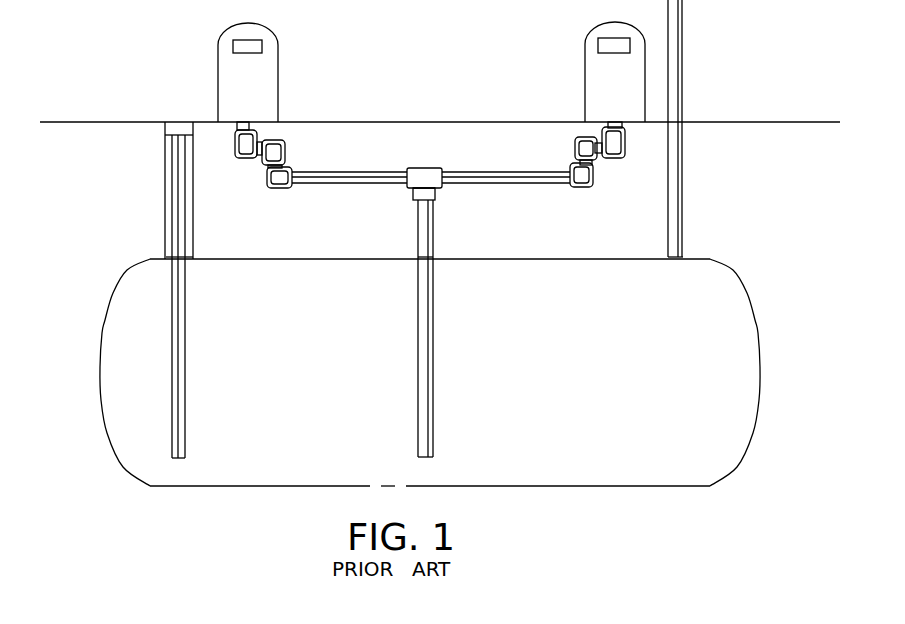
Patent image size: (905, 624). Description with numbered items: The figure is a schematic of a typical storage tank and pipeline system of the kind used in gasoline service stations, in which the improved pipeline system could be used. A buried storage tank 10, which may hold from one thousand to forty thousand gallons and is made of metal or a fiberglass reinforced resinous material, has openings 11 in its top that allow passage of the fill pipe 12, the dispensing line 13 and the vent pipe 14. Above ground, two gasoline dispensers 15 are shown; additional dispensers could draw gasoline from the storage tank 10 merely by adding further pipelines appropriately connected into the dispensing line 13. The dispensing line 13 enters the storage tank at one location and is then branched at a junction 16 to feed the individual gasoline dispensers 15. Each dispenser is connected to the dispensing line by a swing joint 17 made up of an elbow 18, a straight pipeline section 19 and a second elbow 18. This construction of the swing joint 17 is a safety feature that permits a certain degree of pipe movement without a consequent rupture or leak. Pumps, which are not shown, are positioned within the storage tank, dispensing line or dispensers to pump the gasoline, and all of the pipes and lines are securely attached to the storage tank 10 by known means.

The storage tank 10 is at (112, 337).
The openings 11 is at (195, 259).
The fill pipe 12 is at (177, 192).
The dispensing line 13 is at (423, 227).
The vent pipe 14 is at (673, 161).
The gasoline dispensers 15 is at (228, 78).
The junction 16 is at (425, 175).
The swing joint 17 is at (278, 212).
The elbow 18 is at (277, 155).
The straight pipeline section 19 is at (333, 137).